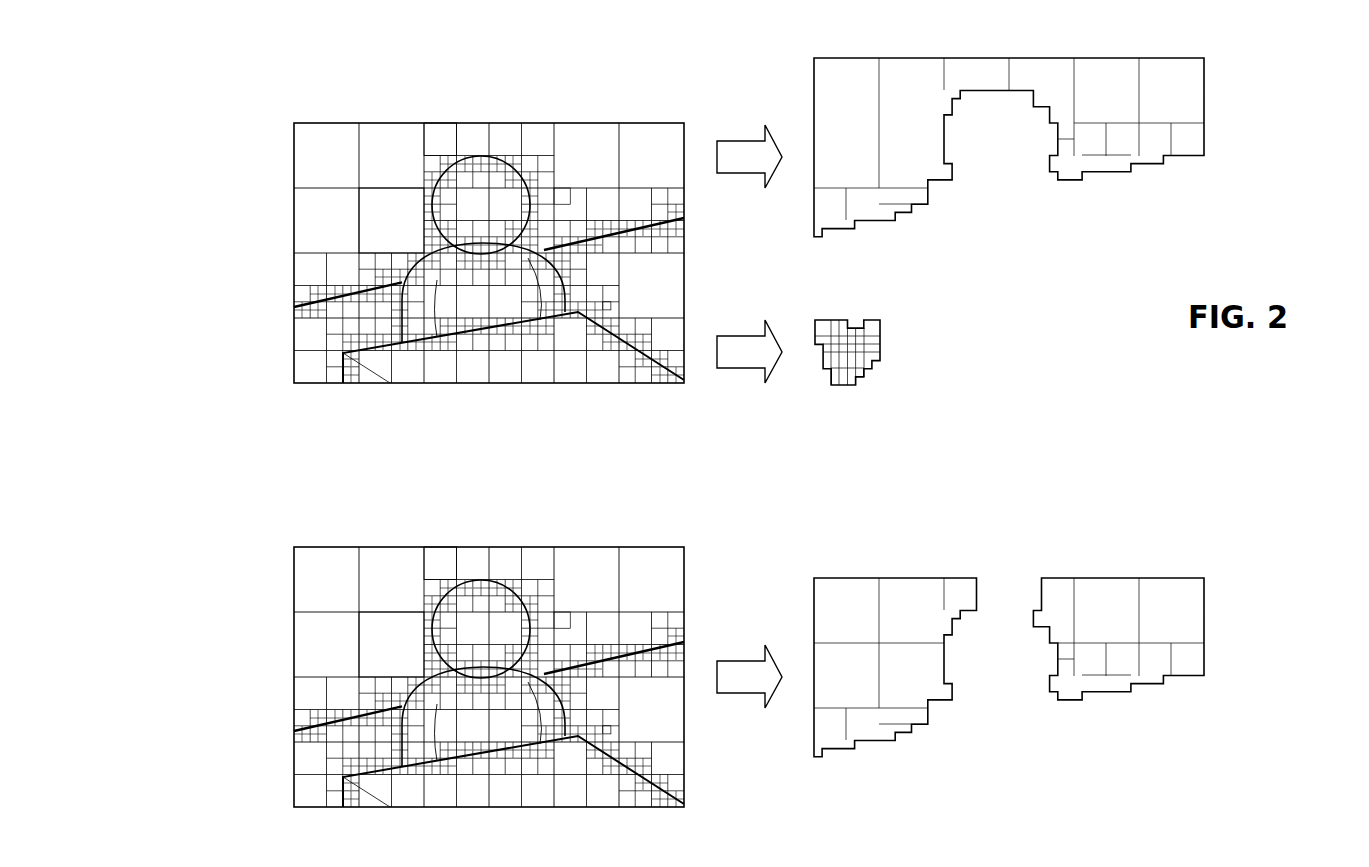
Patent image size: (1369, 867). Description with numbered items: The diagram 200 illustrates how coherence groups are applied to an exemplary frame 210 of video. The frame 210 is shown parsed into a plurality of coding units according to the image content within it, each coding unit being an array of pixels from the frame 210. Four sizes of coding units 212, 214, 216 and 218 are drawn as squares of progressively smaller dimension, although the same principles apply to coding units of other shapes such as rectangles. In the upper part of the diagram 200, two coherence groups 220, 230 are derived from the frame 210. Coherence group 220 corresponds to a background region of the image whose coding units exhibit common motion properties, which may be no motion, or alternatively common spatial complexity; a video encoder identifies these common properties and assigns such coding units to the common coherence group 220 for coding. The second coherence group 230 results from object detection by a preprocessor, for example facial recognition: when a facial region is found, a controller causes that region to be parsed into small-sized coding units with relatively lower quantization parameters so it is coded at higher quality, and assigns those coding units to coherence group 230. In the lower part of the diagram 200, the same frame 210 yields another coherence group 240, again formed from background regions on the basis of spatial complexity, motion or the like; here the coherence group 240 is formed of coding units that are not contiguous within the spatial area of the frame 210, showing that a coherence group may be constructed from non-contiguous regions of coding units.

The coherence group formation diagram 200 is at (1255, 361).
The frame 210 is at (394, 113).
The coding unit 212 is at (358, 208).
The coding unit 214 is at (422, 143).
The coding unit 216 is at (558, 196).
The coding unit 218 is at (603, 302).
The coherence group 220 is at (1013, 50).
The coherence group 230 is at (1013, 310).
The coherence group 240 is at (1013, 570).